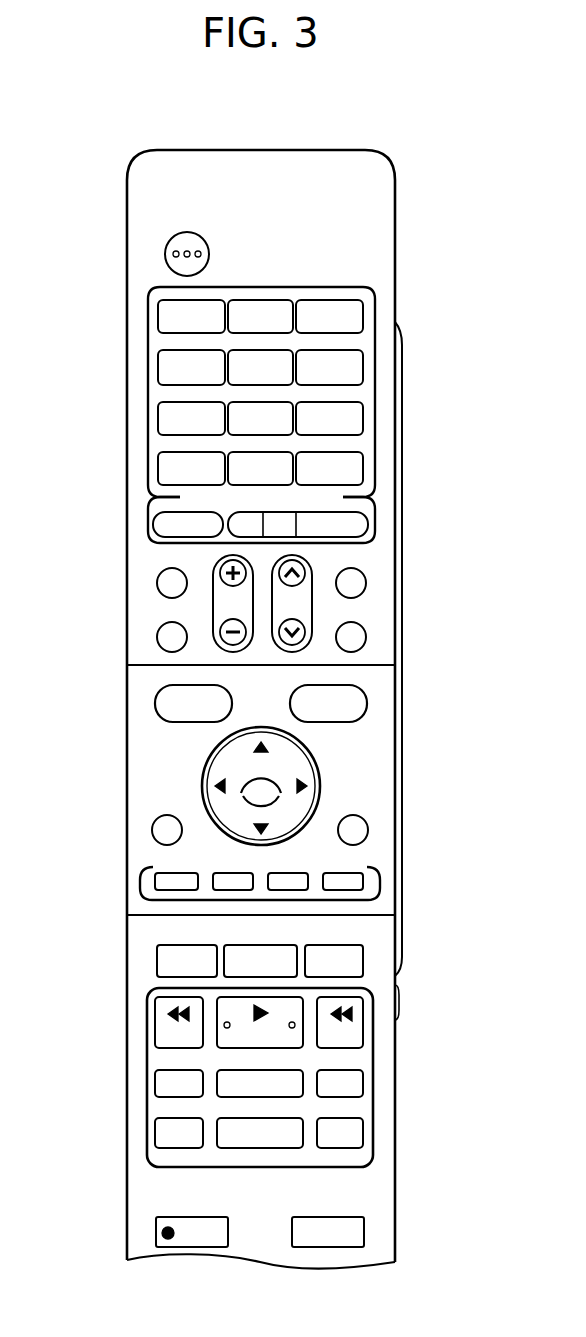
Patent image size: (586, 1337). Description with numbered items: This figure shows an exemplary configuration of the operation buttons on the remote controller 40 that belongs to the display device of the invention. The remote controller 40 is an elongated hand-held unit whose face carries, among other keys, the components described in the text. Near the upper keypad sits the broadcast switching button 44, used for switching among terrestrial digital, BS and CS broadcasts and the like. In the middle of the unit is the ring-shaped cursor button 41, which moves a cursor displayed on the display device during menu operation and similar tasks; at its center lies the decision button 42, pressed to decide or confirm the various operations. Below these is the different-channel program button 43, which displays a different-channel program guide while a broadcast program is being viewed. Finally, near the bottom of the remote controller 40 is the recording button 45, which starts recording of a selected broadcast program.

The remote controller 40 is at (378, 139).
The cursor button 41 is at (302, 768).
The decision button 42 is at (250, 770).
The different-channel program button 43 is at (256, 946).
The broadcast switching button 44 is at (376, 519).
The recording button 45 is at (156, 1231).